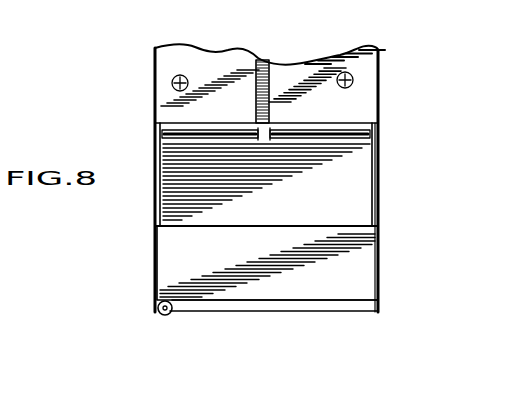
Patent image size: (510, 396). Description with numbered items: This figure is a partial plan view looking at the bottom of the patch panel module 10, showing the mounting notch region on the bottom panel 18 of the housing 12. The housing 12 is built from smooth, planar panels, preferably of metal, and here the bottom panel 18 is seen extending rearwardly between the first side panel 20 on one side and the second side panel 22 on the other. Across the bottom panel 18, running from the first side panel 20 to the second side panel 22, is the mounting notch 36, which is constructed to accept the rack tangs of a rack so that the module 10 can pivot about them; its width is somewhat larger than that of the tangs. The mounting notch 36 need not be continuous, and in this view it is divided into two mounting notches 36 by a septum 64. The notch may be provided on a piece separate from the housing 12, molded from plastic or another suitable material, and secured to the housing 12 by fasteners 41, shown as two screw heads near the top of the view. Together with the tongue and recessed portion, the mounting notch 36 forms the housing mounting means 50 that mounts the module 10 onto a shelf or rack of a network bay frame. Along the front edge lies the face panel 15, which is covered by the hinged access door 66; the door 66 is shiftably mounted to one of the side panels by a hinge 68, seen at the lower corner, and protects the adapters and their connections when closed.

The module 10 is at (138, 230).
The housing 12 is at (312, 58).
The face panel 15 is at (306, 302).
The bottom panel 18 is at (172, 251).
The first side panel 20 is at (380, 218).
The second side panel 22 is at (157, 180).
The mounting notch 36 is at (162, 132).
The fasteners 41 is at (172, 86).
The housing mounting means 50 is at (233, 130).
The septum 64 is at (266, 137).
The hinged access door 66 is at (247, 312).
The hinge 68 is at (161, 314).